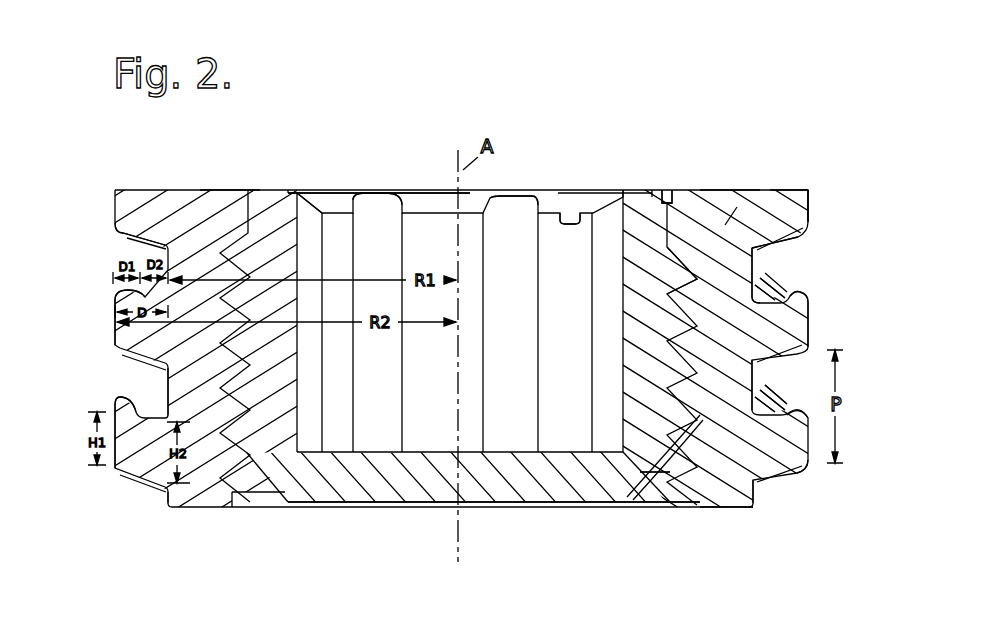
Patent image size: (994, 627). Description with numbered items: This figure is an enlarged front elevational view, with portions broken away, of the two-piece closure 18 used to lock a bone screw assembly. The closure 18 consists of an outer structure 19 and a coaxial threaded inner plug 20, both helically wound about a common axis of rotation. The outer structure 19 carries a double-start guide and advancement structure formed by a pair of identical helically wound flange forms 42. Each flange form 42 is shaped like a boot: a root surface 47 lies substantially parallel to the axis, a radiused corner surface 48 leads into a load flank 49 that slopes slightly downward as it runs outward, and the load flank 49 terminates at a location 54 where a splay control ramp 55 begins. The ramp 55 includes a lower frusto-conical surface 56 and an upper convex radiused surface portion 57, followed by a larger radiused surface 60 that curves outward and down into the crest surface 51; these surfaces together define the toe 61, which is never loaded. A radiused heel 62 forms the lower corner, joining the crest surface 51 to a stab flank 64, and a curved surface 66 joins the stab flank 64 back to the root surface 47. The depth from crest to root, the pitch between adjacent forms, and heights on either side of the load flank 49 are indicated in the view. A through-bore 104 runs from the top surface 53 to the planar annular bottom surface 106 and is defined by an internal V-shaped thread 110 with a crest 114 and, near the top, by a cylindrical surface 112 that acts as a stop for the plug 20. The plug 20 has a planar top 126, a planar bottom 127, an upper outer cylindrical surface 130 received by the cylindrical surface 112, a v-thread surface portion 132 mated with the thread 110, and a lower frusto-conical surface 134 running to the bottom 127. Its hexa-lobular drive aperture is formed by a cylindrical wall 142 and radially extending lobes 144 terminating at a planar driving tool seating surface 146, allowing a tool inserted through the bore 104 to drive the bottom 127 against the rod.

The closure 18 is at (730, 162).
The outer structure 19 is at (807, 193).
The inner plug 20 is at (667, 245).
The flange form 42 is at (808, 297).
The root surface 47 is at (166, 385).
The corner surface 48 is at (768, 297).
The load flank 49 is at (775, 293).
The crest surface 51 is at (114, 338).
The top surface 53 is at (793, 190).
The location 54 is at (193, 265).
The splay control ramp 55 is at (138, 410).
The frusto-conical surface 56 is at (768, 400).
The convex radiused surface portion 57 is at (783, 413).
The radiused surface 60 is at (120, 408).
The toe 61 is at (112, 292).
The heel 62 is at (113, 470).
The stab flank 64 is at (117, 250).
The curved surface 66 is at (155, 488).
The through-bore 104 is at (287, 190).
The bottom surface 106 is at (715, 509).
The internal V-shaped thread 110 is at (662, 472).
The cylindrical surface 112 is at (653, 190).
The crest 114 is at (627, 497).
The top 126 is at (318, 190).
The bottom 127 is at (330, 508).
The upper outer cylindrical surface 130 is at (232, 190).
The v-thread surface portion 132 is at (737, 207).
The lower frusto-conical surface 134 is at (640, 483).
The cylindrical wall 142 is at (577, 212).
The lobes 144 is at (395, 205).
The driving tool seating surface 146 is at (384, 455).